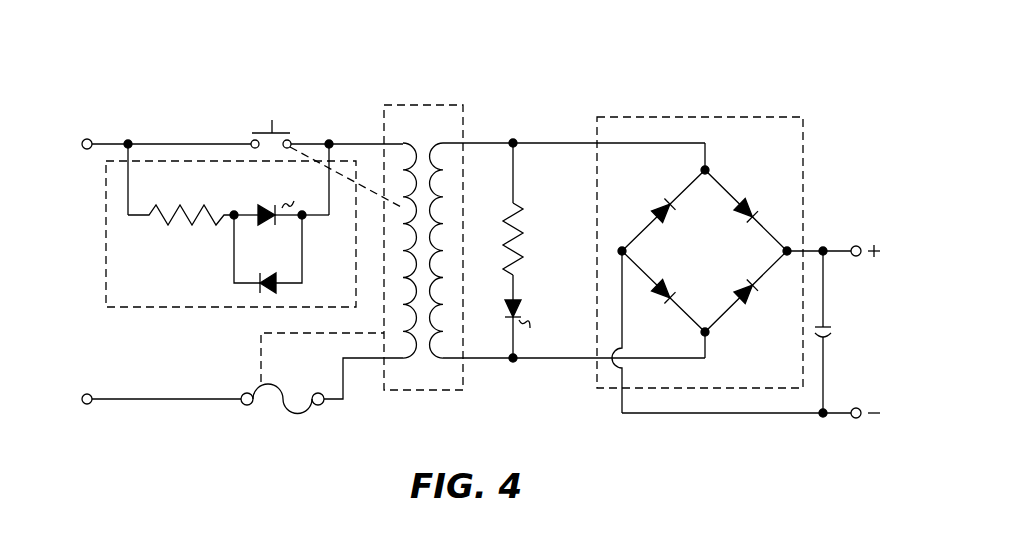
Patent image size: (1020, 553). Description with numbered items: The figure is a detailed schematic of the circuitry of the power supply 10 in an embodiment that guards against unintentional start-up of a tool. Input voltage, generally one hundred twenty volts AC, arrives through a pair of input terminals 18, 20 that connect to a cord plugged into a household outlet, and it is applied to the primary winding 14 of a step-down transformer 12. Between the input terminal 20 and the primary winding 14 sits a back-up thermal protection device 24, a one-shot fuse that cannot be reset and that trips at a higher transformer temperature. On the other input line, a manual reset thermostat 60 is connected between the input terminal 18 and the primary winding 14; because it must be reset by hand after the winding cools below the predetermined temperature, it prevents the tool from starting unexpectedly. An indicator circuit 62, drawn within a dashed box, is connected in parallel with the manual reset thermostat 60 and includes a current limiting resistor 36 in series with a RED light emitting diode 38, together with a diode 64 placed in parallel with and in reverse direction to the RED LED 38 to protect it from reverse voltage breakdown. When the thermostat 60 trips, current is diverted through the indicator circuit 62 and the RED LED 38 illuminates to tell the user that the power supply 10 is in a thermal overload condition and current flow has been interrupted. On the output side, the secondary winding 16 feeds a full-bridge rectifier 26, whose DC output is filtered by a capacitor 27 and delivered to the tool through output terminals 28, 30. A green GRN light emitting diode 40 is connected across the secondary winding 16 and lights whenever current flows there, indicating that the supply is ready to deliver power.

The power supply 10 is at (497, 62).
The step-down transformer 12 is at (423, 227).
The primary winding 14 is at (416, 143).
The secondary winding 16 is at (430, 146).
The input terminal 18 is at (90, 139).
The input terminal 20 is at (87, 405).
The back-up thermal protection device 24 is at (290, 412).
The rectifier 26 is at (670, 117).
The capacitor 27 is at (828, 327).
The output terminal 28 is at (853, 246).
The output terminal 30 is at (859, 409).
The current limiting resistor 36 is at (186, 198).
The RED light emitting diode 38 is at (268, 204).
The GRN light emitting diode 40 is at (507, 305).
The manual reset thermostat 60 is at (281, 132).
The indicator circuit 62 is at (153, 308).
The diode 64 is at (278, 287).